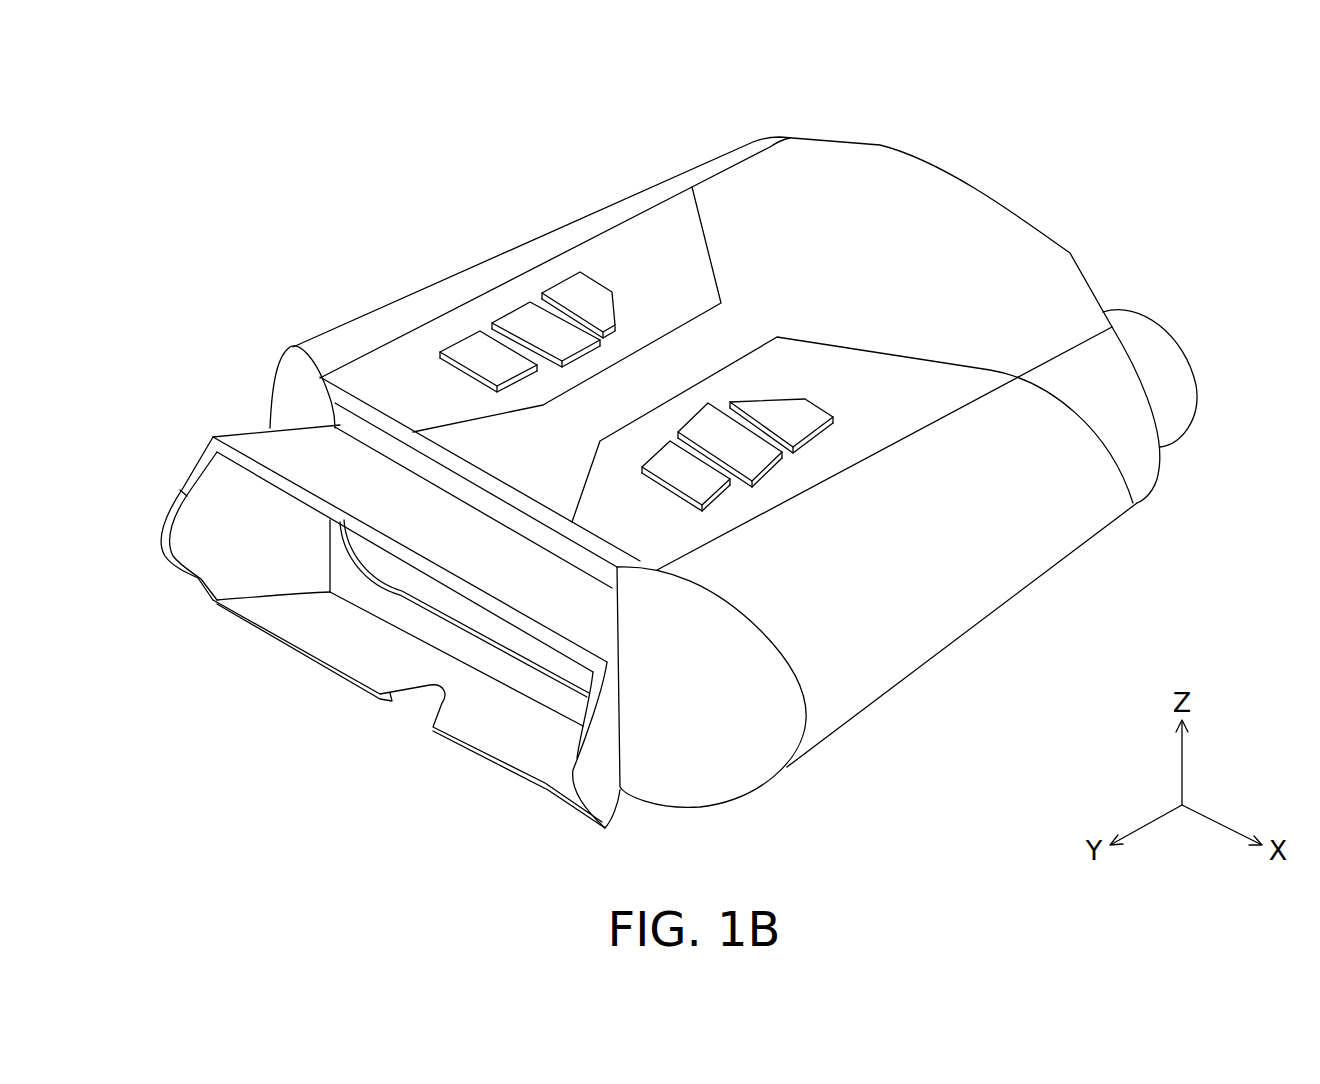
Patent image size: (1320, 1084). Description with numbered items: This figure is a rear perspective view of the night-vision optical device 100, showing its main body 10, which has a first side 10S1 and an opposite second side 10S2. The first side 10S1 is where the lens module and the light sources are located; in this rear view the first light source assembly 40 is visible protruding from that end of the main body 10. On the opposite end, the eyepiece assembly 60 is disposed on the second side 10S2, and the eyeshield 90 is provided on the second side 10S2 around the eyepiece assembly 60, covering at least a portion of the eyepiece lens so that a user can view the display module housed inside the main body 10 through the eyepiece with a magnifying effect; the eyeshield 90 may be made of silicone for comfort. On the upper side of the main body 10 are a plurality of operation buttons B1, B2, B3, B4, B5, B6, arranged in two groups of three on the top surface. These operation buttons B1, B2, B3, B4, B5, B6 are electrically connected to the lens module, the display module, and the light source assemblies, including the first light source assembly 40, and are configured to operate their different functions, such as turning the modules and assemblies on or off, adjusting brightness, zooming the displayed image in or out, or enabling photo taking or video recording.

The night-vision optical device 100 is at (95, 83).
The main body 10 is at (607, 201).
The first side 10S1 is at (1093, 294).
The second side 10S2 is at (288, 381).
The first light source assembly 40 is at (1186, 349).
The eyepiece assembly 60 is at (404, 579).
The eyeshield 90 is at (257, 443).
The operation button B1 is at (800, 415).
The operation button B2 is at (752, 445).
The operation button B3 is at (700, 473).
The operation button B4 is at (582, 288).
The operation button B5 is at (523, 318).
The operation button B6 is at (472, 350).